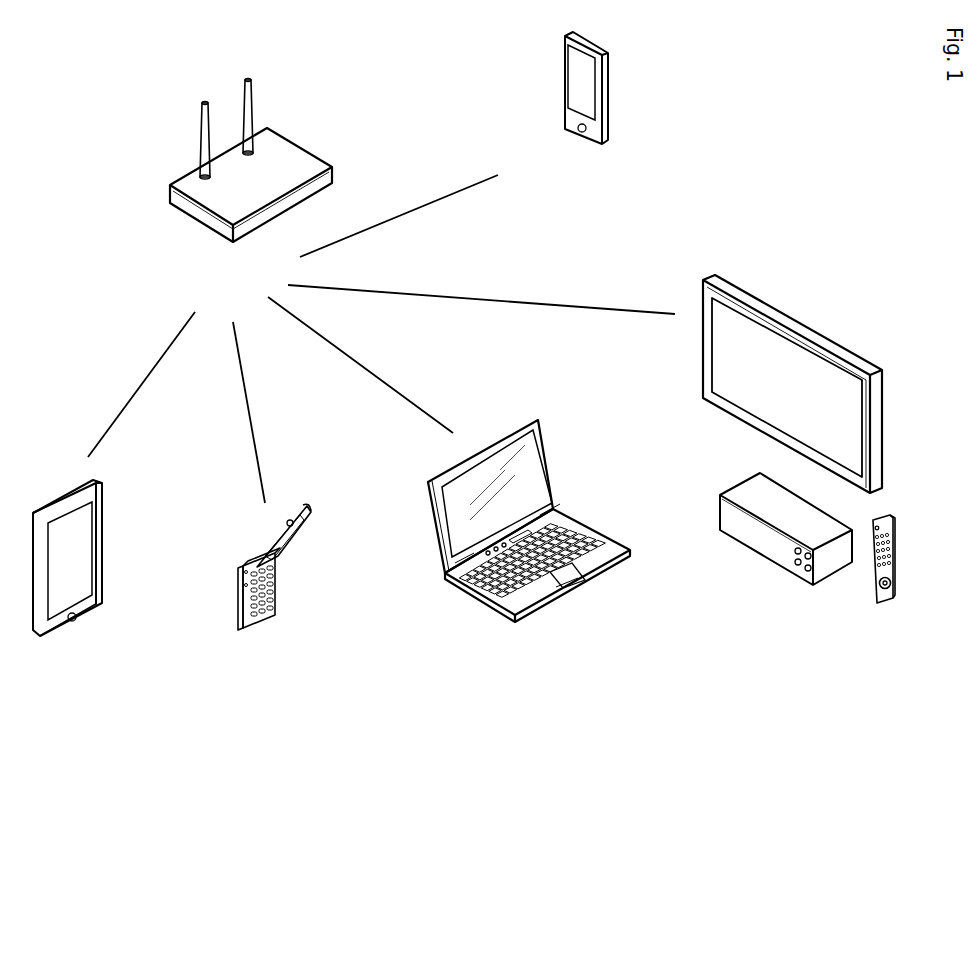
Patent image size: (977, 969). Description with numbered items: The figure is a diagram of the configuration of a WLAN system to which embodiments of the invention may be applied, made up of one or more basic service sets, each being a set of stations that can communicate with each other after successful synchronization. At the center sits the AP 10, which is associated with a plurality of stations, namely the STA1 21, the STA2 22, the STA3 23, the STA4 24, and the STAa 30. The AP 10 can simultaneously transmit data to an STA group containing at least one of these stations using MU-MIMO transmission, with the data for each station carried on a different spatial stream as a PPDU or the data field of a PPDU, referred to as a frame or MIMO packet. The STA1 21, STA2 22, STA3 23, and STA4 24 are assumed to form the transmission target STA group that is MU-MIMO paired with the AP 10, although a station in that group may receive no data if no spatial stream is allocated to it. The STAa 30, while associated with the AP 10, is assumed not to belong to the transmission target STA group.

The AP 10 is at (381, 291).
The STAa 30 is at (581, 124).
The STA1 21 is at (63, 595).
The STA2 22 is at (271, 606).
The STA3 23 is at (529, 555).
The STA4 24 is at (799, 465).